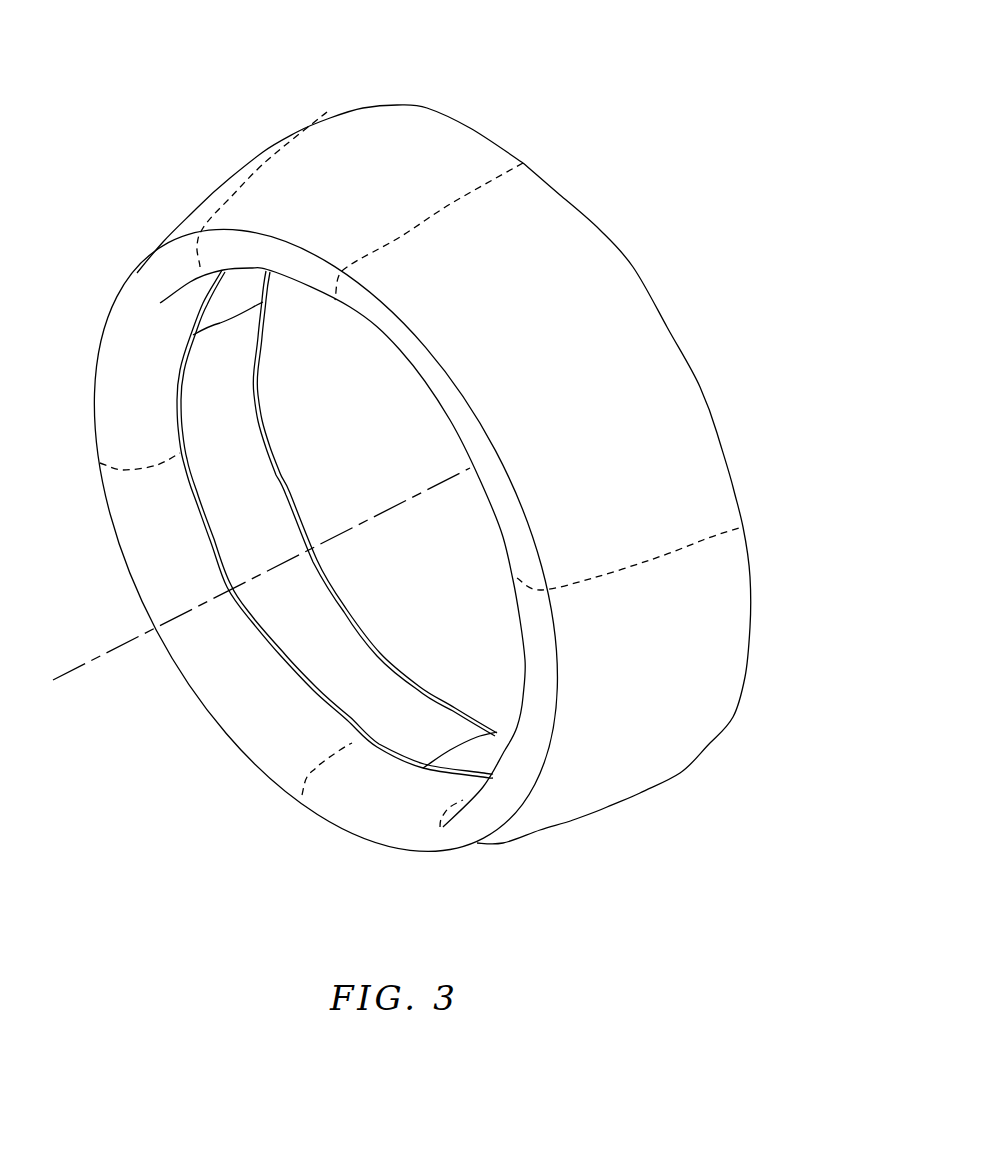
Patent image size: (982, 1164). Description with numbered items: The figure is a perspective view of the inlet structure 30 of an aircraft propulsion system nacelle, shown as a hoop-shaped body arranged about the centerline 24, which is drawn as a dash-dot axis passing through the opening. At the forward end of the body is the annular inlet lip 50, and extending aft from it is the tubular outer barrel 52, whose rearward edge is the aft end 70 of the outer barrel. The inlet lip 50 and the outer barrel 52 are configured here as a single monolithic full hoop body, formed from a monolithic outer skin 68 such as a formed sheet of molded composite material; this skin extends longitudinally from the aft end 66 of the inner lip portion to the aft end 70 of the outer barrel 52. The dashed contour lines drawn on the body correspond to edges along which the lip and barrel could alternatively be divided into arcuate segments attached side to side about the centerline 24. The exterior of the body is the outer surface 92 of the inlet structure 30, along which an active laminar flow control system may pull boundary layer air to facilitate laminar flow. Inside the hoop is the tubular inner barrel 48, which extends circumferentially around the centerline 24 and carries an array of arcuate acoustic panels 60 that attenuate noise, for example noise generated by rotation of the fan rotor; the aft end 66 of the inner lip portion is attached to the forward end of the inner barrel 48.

The inlet structure 30 is at (375, 467).
The aft end of the outer barrel 70 is at (420, 107).
The outer surface 92 is at (583, 248).
The monolithic outer skin 68 is at (267, 203).
The outer barrel 52 is at (345, 164).
The inlet lip 50 is at (141, 283).
The acoustic panels 60 is at (237, 295).
The aft end of the inner lip portion 66 is at (187, 403).
The inner barrel 48 is at (310, 608).
The centerline 24 is at (78, 673).